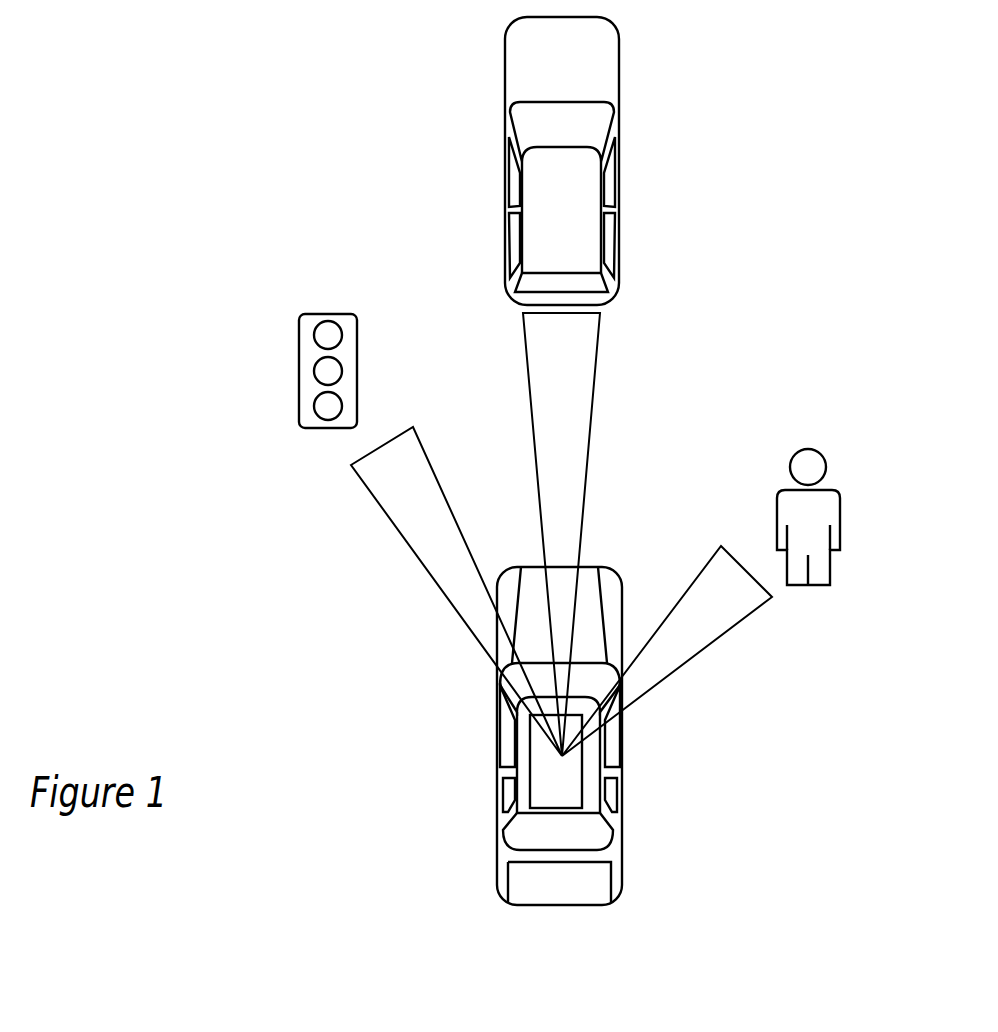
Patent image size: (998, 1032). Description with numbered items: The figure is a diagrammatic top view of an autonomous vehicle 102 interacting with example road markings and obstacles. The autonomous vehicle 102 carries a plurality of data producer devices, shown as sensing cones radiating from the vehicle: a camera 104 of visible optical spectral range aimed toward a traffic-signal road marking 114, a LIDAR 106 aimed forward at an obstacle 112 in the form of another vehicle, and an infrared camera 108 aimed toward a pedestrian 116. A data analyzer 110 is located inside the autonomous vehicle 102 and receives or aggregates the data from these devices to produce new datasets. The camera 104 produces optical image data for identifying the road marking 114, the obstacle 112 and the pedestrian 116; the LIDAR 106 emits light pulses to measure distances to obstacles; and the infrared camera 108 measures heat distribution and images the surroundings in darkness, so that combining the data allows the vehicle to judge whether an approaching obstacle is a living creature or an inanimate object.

The autonomous vehicle 102 is at (485, 932).
The camera 104 is at (368, 592).
The LIDAR 106 is at (672, 548).
The infrared camera 108 is at (830, 710).
The data analyzer 110 is at (600, 772).
The obstacle 112 is at (462, 208).
The road marking 114 is at (213, 403).
The pedestrian 116 is at (940, 550).